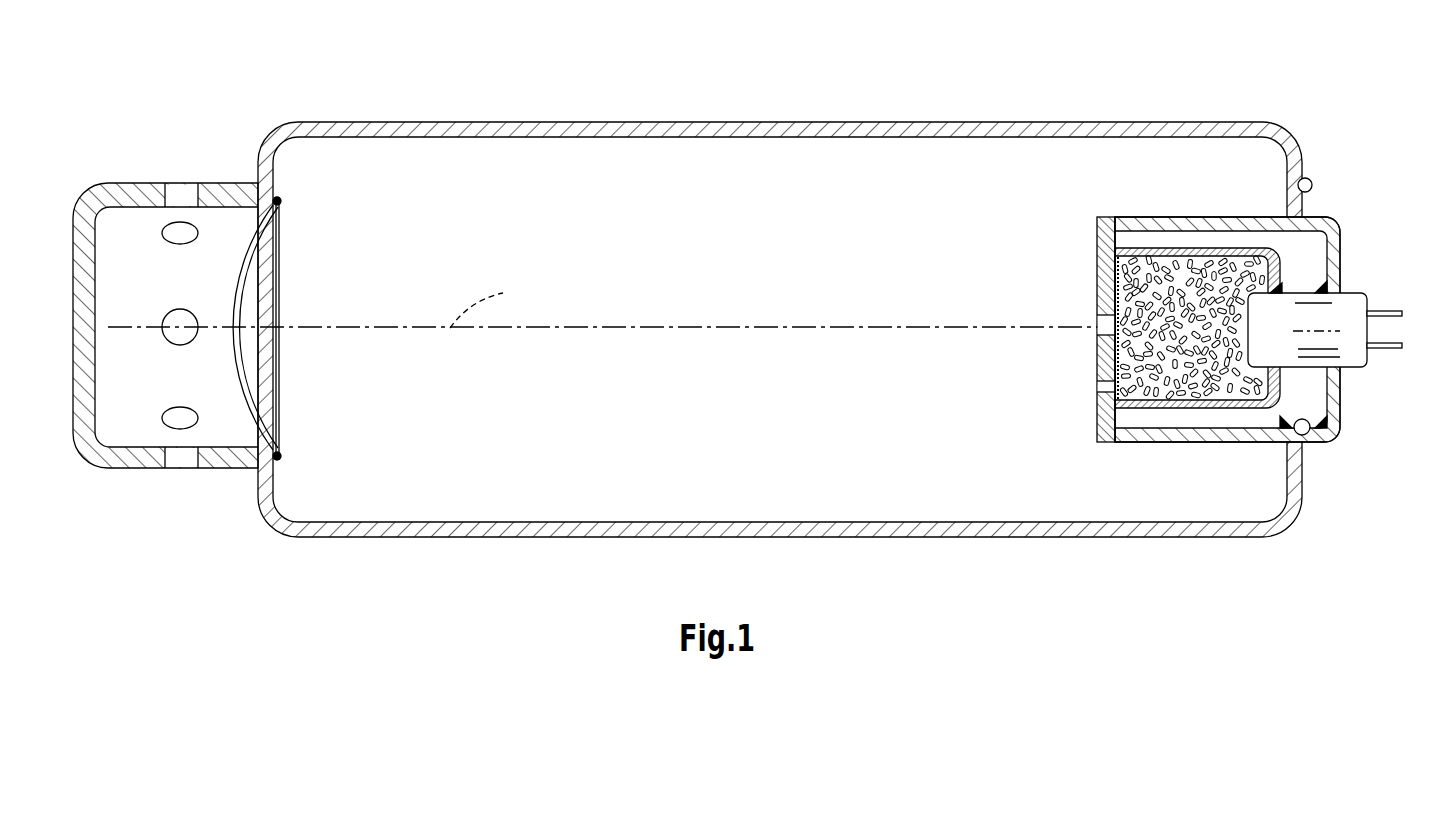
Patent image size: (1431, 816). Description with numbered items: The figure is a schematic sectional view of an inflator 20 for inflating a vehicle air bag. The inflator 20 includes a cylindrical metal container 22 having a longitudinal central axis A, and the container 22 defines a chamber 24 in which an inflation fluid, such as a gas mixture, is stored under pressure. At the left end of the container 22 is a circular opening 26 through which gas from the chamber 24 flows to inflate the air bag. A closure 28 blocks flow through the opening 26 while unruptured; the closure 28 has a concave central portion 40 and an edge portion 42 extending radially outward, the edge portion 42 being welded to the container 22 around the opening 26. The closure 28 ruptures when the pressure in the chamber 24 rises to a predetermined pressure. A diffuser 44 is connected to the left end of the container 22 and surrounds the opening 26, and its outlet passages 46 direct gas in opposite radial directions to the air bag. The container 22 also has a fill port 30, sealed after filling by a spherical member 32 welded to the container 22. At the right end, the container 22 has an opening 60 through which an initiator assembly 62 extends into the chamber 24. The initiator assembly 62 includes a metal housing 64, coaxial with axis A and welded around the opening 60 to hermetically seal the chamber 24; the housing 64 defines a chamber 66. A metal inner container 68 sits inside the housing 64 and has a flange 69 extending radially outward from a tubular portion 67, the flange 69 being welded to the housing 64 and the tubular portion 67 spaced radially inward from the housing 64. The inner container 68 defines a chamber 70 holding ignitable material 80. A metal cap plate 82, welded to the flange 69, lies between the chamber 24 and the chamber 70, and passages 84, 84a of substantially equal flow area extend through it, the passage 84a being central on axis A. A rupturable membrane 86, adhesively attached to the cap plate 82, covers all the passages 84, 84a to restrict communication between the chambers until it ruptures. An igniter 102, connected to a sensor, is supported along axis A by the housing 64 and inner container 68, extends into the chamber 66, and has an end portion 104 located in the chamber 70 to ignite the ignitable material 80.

The inflator 20 is at (1005, 70).
The cylindrical metal container 22 is at (778, 122).
The chamber 24 is at (852, 214).
The circular opening 26 is at (258, 405).
The closure 28 is at (235, 293).
The fill port 30 is at (1281, 167).
The spherical member 32 is at (1311, 185).
The concave central portion 40 is at (248, 305).
The edge portion 42 is at (283, 205).
The diffuser 44 is at (126, 178).
The outlet passages 46 is at (186, 195).
The opening 60 is at (1313, 432).
The initiator assembly 62 is at (1348, 244).
The metal housing 64 is at (1322, 228).
The chamber 66 is at (1290, 262).
The tubular portion 67 is at (1230, 260).
The metal inner container 68 is at (1185, 250).
The flange 69 is at (1118, 223).
The chamber 70 is at (1190, 403).
The ignitable material 80 is at (1105, 380).
The metal cap plate 82 is at (1097, 235).
The passages 84 is at (1097, 277).
The central passage 84a is at (1097, 335).
The rupturable membrane 86 is at (1117, 270).
The igniter 102 is at (1374, 297).
The end portion 104 is at (1258, 350).